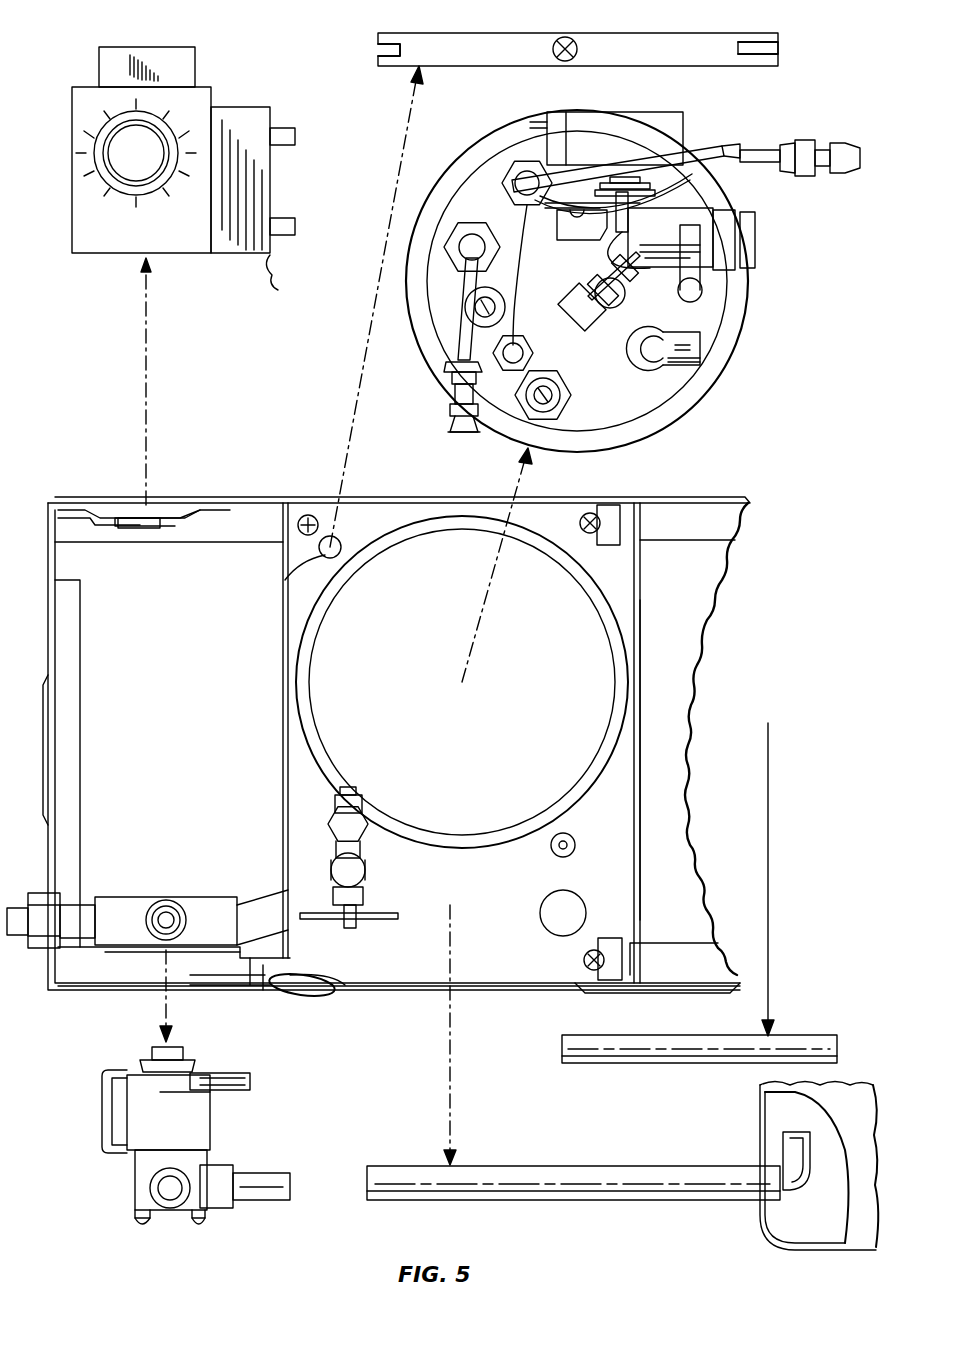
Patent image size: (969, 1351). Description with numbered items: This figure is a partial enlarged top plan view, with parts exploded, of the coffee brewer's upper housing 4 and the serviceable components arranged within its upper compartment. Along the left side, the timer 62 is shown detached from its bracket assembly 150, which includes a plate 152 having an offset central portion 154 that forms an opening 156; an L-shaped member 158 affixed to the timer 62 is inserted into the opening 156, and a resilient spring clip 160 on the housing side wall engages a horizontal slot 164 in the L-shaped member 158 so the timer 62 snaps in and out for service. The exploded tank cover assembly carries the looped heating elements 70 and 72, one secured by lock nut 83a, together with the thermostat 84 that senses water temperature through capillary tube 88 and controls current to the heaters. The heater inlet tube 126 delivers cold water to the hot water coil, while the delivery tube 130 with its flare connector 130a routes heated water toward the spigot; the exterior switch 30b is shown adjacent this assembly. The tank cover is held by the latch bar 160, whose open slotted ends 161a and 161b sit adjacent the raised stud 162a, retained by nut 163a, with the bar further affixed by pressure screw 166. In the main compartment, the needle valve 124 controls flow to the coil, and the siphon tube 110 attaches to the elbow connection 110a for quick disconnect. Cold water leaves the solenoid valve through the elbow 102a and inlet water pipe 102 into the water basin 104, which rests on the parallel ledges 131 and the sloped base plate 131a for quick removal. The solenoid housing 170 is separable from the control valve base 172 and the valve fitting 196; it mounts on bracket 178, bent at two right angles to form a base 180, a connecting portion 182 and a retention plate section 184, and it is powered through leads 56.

The upper housing 4 is at (415, 990).
The on/off exterior switch 30b is at (440, 375).
The leads 56 is at (193, 1112).
The timer 62 is at (92, 215).
The heating element 70 is at (515, 285).
The heating element 72 is at (570, 400).
The lock nut 83a is at (532, 350).
The thermostat 84 is at (600, 135).
The capillary tube 88 is at (558, 240).
The inlet water pipe 102 is at (680, 1167).
The elbow 102a is at (175, 1190).
The water basin 104 is at (760, 1100).
The siphon tube 110 is at (590, 1063).
The elbow connection 110a is at (700, 340).
The needle valve 124 is at (355, 862).
The heater inlet tube 126 is at (448, 250).
The delivery tube 130 is at (690, 160).
The flare connector 130a is at (790, 148).
The ledges 131 is at (690, 525).
The sloped base plate 131a is at (695, 867).
The bracket assembly 150 is at (97, 522).
The plate 152 is at (115, 478).
The offset central portion 154 is at (150, 528).
The opening 156 is at (160, 508).
The L-shaped member 158 is at (178, 47).
The latch bar 160 is at (600, 47).
The open slotted end 161a is at (378, 48).
The open slotted end 161b is at (778, 45).
The threaded stud 162a is at (335, 540).
The nut 163a is at (325, 558).
The horizontal slot 164 is at (495, 945).
The pressure screw 166 is at (560, 38).
The solenoid housing 170 is at (140, 1125).
The control valve base 172 is at (215, 905).
The bracket 178 is at (208, 950).
The base 180 is at (336, 992).
The connecting portion 182 is at (263, 970).
The retention plate section 184 is at (148, 950).
The valve fitting 196 is at (166, 915).